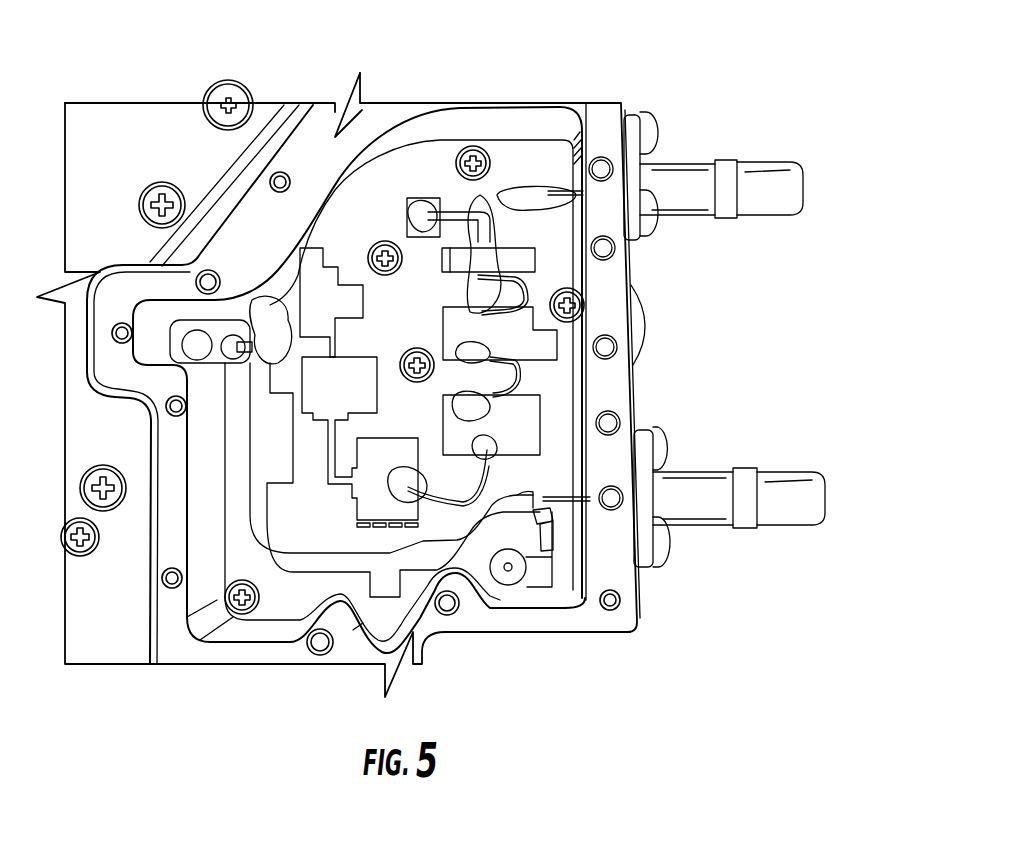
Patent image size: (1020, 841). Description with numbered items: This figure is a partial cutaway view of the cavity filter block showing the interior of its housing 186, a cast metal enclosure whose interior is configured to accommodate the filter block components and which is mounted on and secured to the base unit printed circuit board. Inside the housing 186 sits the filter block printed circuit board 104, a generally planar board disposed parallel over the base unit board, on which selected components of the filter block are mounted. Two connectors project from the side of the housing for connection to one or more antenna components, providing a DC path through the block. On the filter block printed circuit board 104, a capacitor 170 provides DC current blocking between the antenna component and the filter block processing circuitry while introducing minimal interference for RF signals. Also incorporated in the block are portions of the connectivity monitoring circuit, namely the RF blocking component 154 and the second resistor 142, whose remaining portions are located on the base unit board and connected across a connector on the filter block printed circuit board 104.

The filter block printed circuit board 104 is at (402, 163).
The capacitor 170 is at (243, 343).
The housing 186 is at (601, 113).
The RF blocking component 154 is at (557, 512).
The second resistor 142 is at (557, 557).